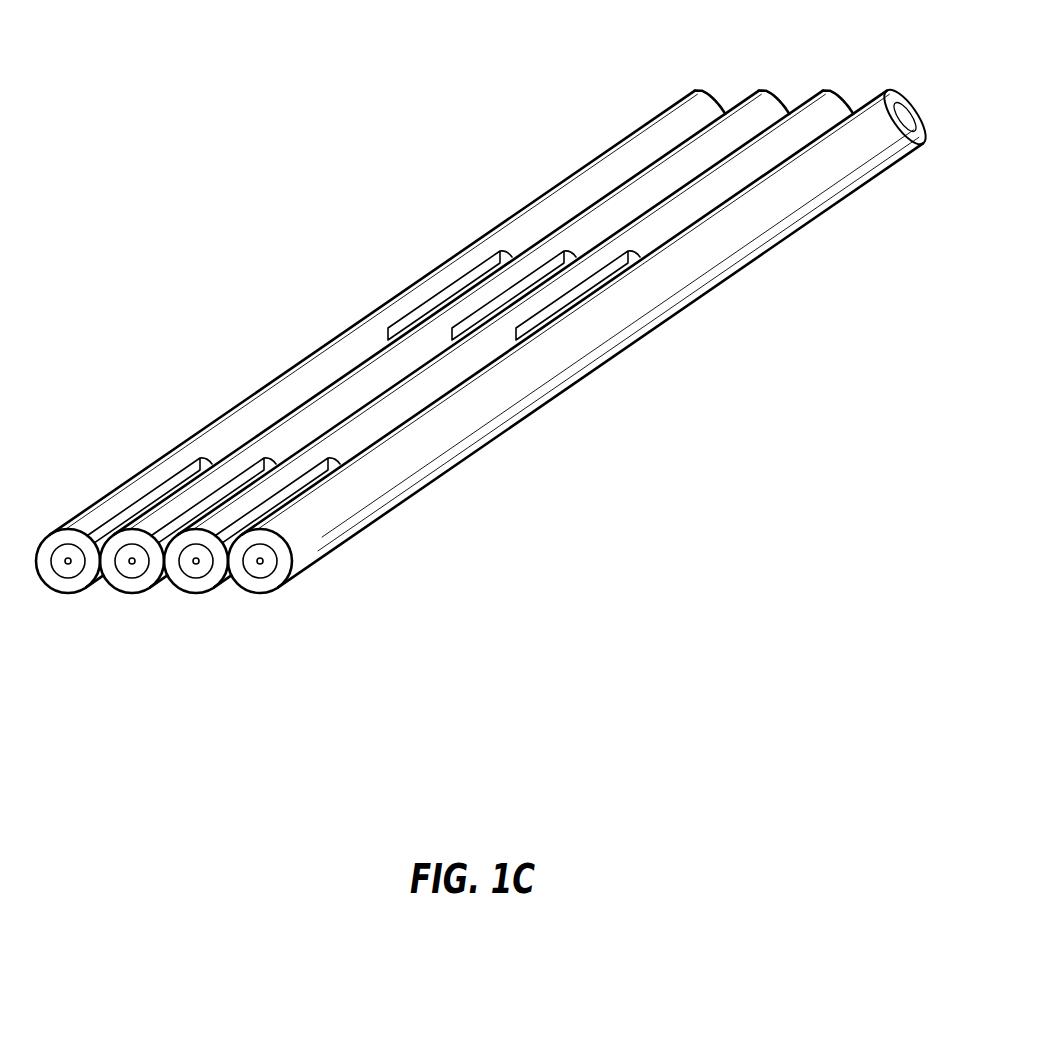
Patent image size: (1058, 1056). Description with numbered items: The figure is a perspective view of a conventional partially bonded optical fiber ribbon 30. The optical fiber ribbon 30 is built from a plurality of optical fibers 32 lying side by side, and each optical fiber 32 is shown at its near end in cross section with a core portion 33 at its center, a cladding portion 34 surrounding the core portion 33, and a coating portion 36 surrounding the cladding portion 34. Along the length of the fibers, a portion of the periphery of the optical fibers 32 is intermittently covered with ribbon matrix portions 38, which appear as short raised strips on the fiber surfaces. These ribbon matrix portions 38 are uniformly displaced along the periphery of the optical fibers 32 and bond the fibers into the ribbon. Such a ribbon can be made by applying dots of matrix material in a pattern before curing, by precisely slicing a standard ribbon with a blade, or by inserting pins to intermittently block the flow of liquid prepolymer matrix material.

The partially bonded optical fiber ribbon 30 is at (476, 373).
The optical fiber 32 is at (889, 91).
The core portion 33 is at (259, 566).
The cladding portion 34 is at (248, 574).
The coating portion 36 is at (264, 594).
The ribbon matrix portion 38 is at (558, 308).